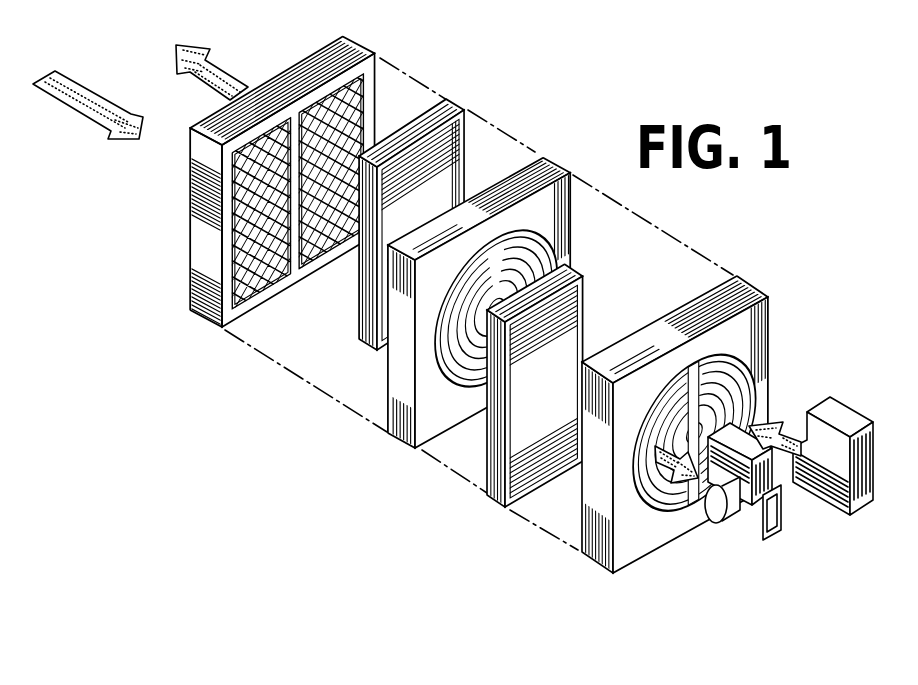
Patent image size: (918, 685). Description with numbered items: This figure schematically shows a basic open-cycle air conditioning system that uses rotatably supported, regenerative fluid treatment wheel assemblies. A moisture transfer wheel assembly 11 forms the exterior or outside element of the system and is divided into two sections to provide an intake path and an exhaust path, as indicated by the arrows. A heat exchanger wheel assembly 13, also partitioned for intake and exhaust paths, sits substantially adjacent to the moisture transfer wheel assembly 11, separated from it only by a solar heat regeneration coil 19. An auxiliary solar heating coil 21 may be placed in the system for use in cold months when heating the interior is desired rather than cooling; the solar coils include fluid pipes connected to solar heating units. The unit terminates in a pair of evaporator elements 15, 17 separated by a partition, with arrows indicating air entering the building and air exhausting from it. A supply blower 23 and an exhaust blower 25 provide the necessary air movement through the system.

The moisture transfer wheel assembly 11 is at (753, 326).
The heat exchanger wheel assembly 13 is at (542, 222).
The evaporator element 15 is at (327, 163).
The evaporator element 17 is at (276, 163).
The solar heat regeneration coil 19 is at (585, 305).
The auxiliary solar heating coil 21 is at (450, 102).
The supply blower 23 is at (828, 412).
The exhaust blower 25 is at (746, 533).